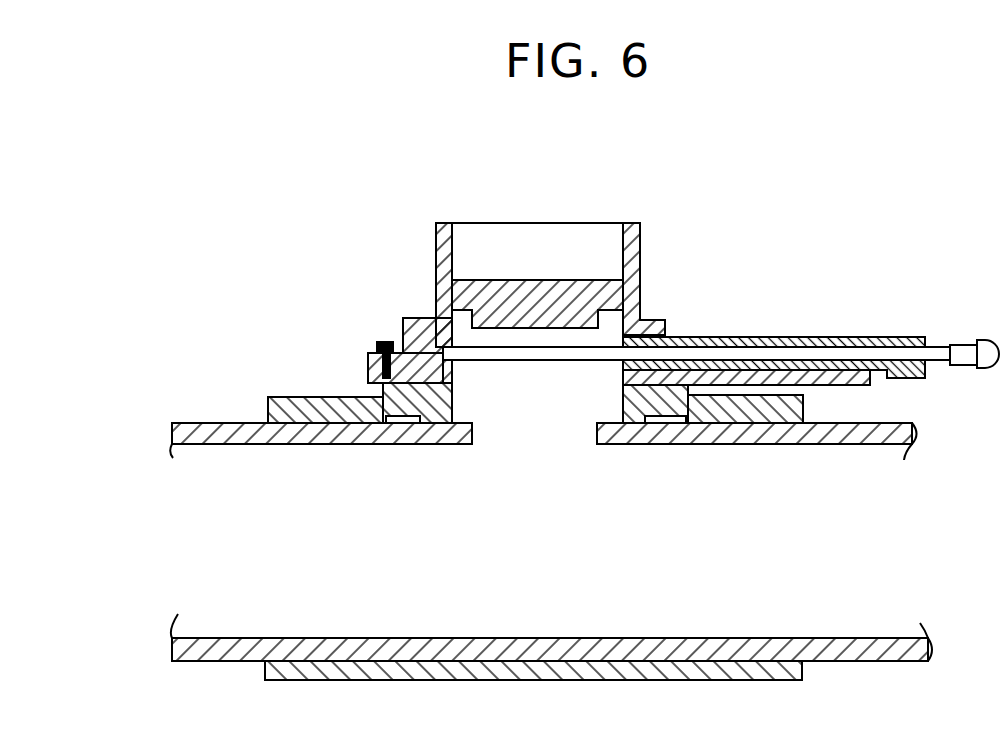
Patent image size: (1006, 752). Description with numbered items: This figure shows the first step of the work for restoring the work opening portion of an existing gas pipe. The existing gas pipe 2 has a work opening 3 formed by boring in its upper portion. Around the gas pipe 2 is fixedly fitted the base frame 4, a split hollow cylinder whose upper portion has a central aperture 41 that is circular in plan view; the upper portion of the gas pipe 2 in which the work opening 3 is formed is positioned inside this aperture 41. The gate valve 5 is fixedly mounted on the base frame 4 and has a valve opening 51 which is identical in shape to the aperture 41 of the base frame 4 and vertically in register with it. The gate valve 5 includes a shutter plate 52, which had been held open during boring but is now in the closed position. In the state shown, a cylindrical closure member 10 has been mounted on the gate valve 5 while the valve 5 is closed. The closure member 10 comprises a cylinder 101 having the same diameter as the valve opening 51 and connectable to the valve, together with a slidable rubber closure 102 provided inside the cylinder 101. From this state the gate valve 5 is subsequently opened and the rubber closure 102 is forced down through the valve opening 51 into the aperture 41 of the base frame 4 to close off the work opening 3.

The gas pipe 2 is at (222, 420).
The work opening 3 is at (557, 436).
The base frame 4 is at (303, 397).
The aperture 41 is at (440, 444).
The valve opening 51 is at (460, 361).
The closure member 10 is at (602, 239).
The cylinder 101 is at (632, 258).
The rubber closure 102 is at (538, 280).
The gate valve 5 is at (877, 342).
The shutter plate 52 is at (812, 350).